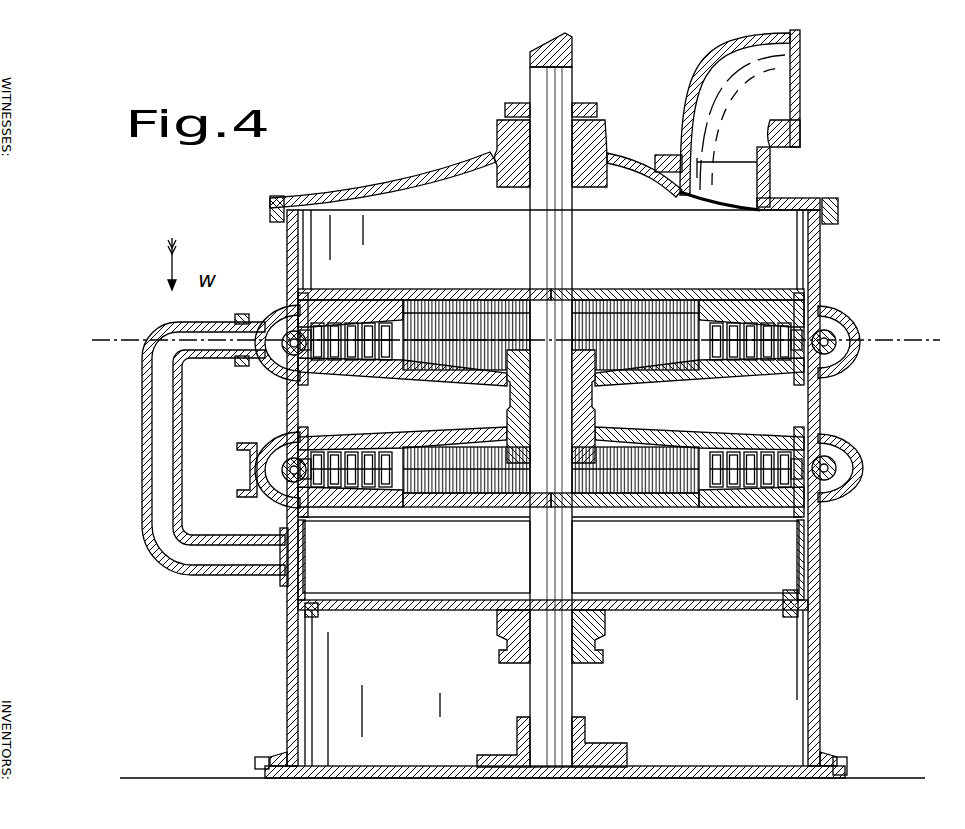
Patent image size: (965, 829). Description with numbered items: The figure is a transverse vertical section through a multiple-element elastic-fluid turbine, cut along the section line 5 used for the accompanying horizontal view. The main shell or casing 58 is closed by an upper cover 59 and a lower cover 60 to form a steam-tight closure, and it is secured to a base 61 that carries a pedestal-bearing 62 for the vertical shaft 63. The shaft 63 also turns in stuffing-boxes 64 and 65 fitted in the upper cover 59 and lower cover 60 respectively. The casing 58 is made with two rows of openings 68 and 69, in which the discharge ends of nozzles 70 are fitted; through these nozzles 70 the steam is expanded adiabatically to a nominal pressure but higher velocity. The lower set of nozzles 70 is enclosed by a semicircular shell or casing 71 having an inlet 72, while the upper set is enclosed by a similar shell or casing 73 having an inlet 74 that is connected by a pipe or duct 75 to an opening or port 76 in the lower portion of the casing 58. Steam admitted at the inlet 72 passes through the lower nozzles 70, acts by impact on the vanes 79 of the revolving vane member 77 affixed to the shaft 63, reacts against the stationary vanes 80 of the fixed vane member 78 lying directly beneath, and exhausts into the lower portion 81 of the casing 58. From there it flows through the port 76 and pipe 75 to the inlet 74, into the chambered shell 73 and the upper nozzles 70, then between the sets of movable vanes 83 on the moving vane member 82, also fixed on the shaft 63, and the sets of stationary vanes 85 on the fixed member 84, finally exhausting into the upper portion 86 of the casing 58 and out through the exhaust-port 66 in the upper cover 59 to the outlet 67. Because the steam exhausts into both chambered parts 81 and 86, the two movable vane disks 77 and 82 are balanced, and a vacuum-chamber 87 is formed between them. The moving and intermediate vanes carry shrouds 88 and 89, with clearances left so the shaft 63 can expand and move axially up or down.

The section line 5 is at (516, 326).
The main shell or casing 58 is at (822, 246).
The upper cover 59 is at (411, 187).
The lower cover 60 is at (714, 610).
The base 61 is at (688, 766).
The pedestal-bearing 62 is at (588, 732).
The vertical shaft 63 is at (534, 230).
The stuffing-box 64 is at (581, 104).
The stuffing-box 65 is at (592, 638).
The exhaust-port 66 is at (739, 193).
The outlet 67 is at (790, 100).
The openings 68 is at (292, 420).
The openings 69 is at (291, 305).
The nozzles 70 is at (279, 350).
The shell or casing 71 is at (857, 480).
The inlet 72 is at (240, 462).
The shell or casing 73 is at (267, 308).
The inlet 74 is at (252, 325).
The pipe or duct 75 is at (150, 428).
The opening or port 76 is at (293, 556).
The revolving vane member 77 is at (460, 437).
The fixed or stationary vane member 78 is at (410, 493).
The vanes 79 is at (372, 450).
The stationary vanes 80 is at (368, 493).
The lower portion of the shell or casing 81 is at (551, 555).
The moving vane member 82 is at (428, 380).
The movable vanes 83 is at (735, 345).
The fixed member 84 is at (447, 307).
The stationary vanes 85 is at (322, 325).
The upper portion of the shell or casing 86 is at (553, 250).
The vacuum-chamber 87 is at (710, 352).
The shroud 88 is at (370, 323).
The shroud 89 is at (320, 455).